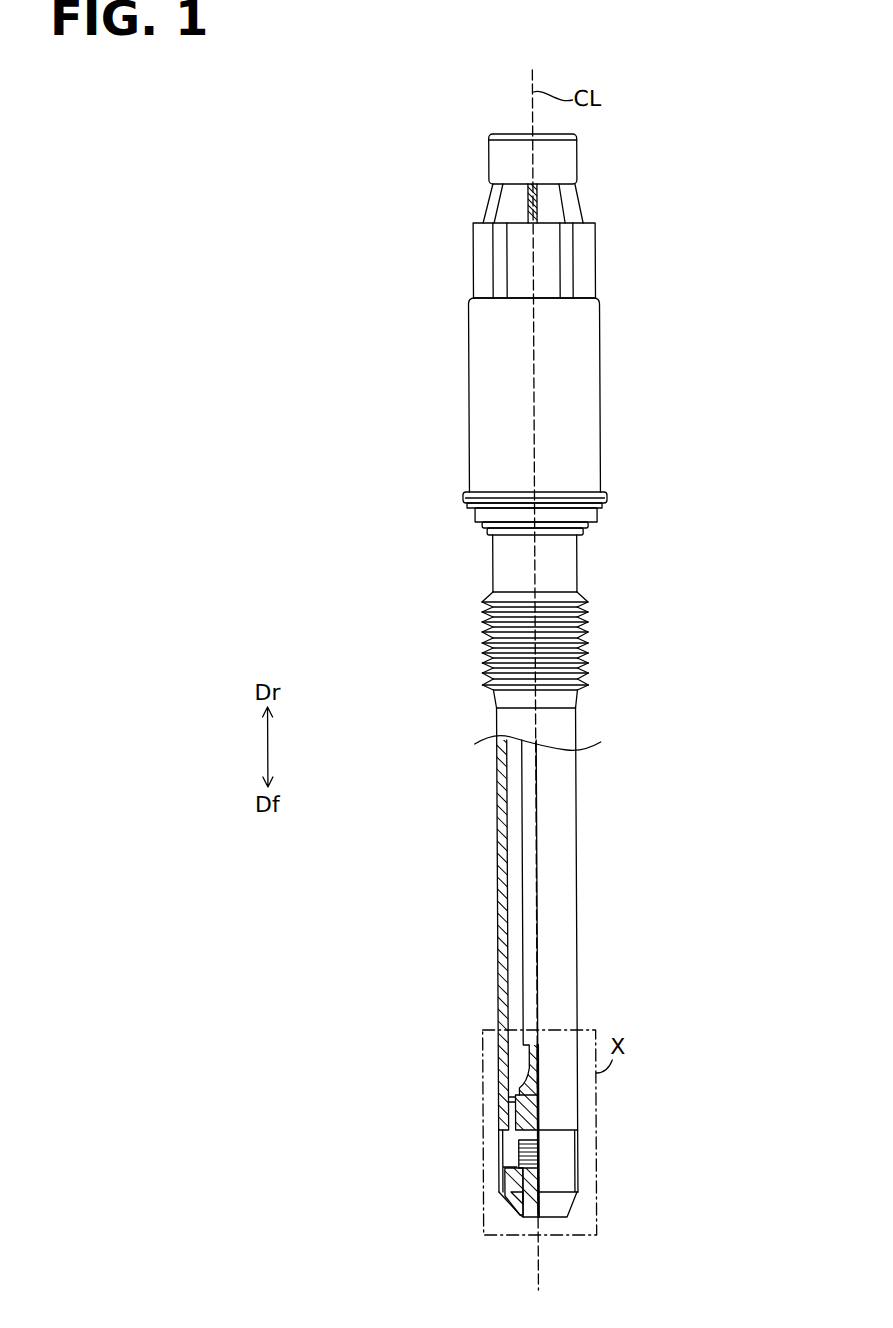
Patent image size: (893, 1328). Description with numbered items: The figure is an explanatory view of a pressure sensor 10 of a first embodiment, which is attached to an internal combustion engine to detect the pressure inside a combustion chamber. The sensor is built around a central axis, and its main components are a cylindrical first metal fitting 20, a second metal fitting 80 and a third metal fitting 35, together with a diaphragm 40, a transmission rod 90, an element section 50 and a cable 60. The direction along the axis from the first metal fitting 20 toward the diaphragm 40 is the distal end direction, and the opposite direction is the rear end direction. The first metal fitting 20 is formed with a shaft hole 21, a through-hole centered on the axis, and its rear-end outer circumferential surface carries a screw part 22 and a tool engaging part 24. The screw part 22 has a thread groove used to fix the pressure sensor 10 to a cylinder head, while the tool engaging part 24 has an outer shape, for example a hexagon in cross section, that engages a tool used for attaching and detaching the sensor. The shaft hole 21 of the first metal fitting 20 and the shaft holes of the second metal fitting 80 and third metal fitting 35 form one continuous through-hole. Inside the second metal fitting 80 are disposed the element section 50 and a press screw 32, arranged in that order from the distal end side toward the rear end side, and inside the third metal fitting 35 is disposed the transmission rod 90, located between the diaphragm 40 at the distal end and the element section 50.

The pressure sensor 10 is at (702, 193).
The tool engaging part 24 is at (478, 259).
The screw part 22 is at (479, 648).
The first metal fitting 20 is at (493, 942).
The shaft hole 21 is at (511, 788).
The cable 60 is at (516, 881).
The press screw 32 is at (505, 1106).
The second metal fitting 80 is at (513, 1156).
The third metal fitting 35 is at (500, 1190).
The transmission rod 90 is at (515, 1198).
The diaphragm 40 is at (517, 1218).
The element section 50 is at (551, 1166).